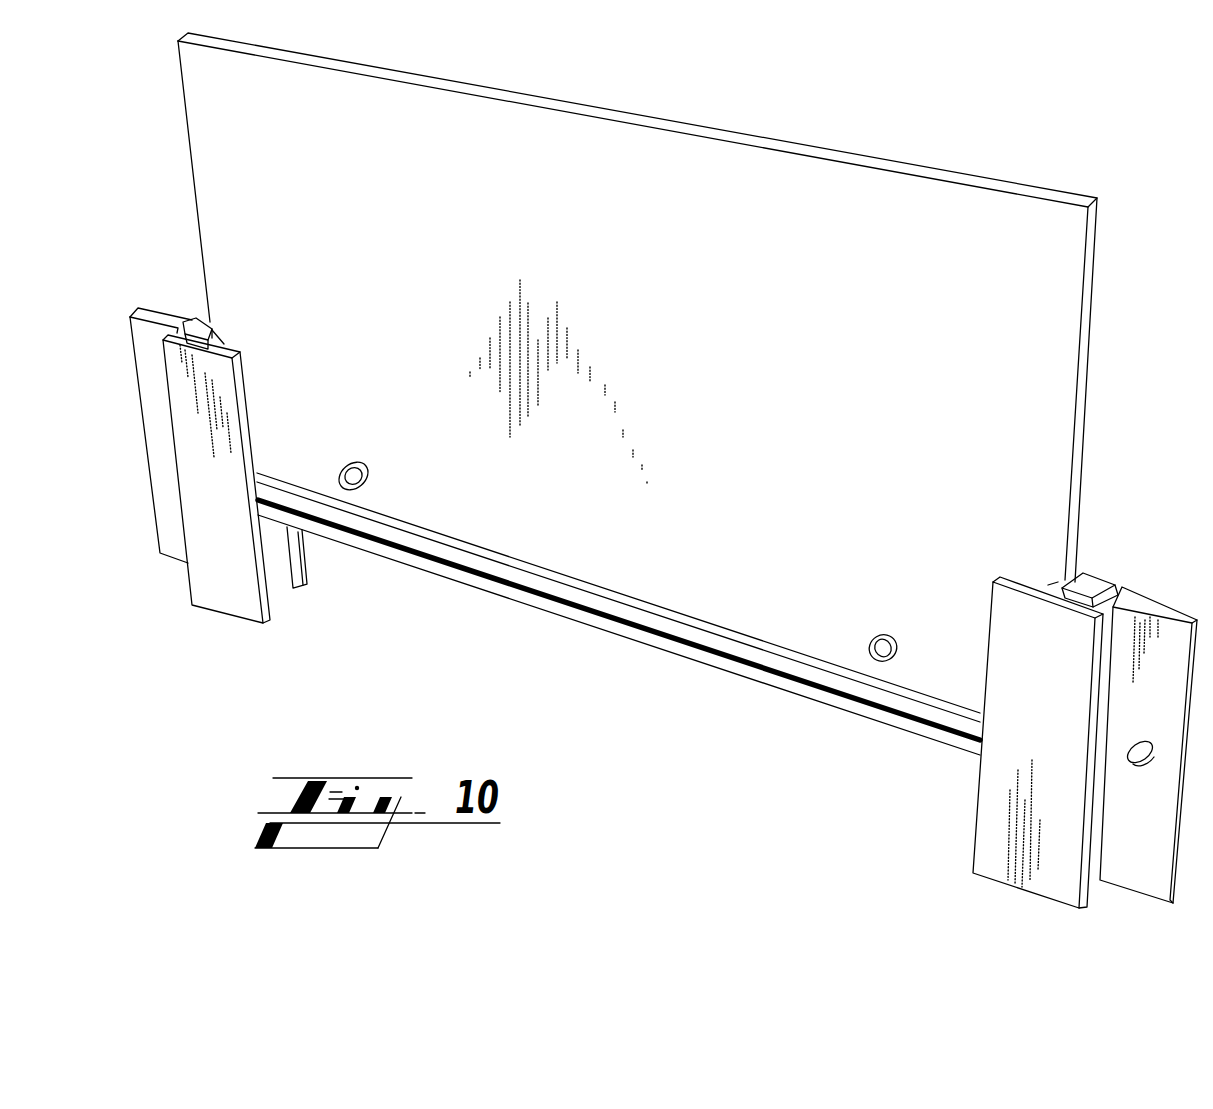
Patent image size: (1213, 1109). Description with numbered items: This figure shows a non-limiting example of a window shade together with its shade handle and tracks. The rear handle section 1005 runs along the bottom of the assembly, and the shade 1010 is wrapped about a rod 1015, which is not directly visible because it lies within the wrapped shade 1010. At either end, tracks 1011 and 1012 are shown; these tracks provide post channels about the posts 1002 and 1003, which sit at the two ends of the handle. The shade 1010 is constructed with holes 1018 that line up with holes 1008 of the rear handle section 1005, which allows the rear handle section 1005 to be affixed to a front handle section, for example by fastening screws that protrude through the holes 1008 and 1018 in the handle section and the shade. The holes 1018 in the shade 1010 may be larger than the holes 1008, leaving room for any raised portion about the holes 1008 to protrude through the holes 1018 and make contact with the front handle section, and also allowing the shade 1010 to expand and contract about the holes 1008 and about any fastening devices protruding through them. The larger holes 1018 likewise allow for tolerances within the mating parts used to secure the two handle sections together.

The shade 1010 is at (1087, 333).
The post 1002 is at (198, 330).
The post 1003 is at (1083, 582).
The track 1011 is at (235, 620).
The track 1012 is at (978, 790).
The rear handle section 1005 is at (618, 614).
The rod 1015 is at (640, 612).
The holes 1008 is at (356, 473).
The holes 1018 is at (343, 465).